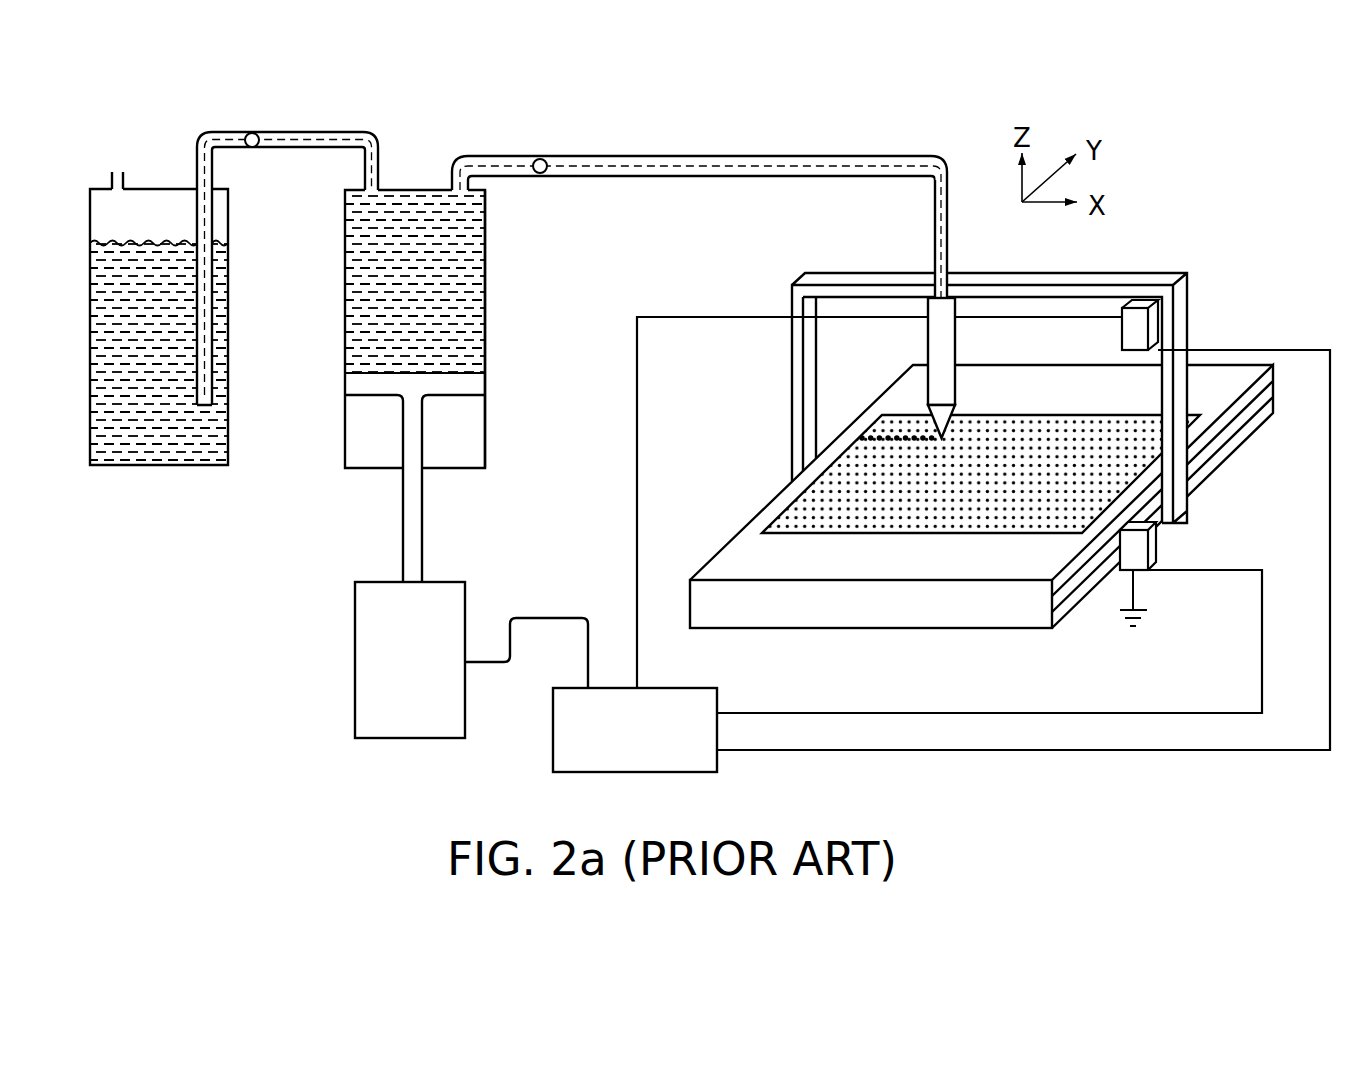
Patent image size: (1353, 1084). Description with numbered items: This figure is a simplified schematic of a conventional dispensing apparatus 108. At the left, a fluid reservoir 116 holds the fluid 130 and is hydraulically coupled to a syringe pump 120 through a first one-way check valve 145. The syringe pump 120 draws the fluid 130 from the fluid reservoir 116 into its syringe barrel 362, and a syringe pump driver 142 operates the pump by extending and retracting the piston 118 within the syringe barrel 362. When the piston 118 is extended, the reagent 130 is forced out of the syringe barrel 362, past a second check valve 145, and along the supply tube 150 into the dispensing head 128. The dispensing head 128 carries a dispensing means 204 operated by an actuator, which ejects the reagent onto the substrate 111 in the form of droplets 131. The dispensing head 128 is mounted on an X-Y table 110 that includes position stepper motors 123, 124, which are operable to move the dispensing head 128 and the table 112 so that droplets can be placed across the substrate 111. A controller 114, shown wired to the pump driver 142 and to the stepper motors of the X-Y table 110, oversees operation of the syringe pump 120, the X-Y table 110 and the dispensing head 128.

The dispensing apparatus 108 is at (732, 148).
The X-Y table 110 is at (1218, 285).
The substrate 111 is at (918, 527).
The table 112 is at (808, 602).
The controller 114 is at (553, 756).
The fluid reservoir 116 is at (151, 474).
The piston 118 is at (370, 388).
The syringe pump 120 is at (343, 264).
The position stepper motor 123 is at (1153, 333).
The position stepper motor 124 is at (1150, 552).
The dispensing head 128 is at (893, 371).
The fluid 130 is at (458, 280).
The row of deposited dots 131 is at (881, 447).
The syringe pump driver 142 is at (355, 631).
The one-way check valve 145 is at (252, 133).
The vertical feed pipe 150 is at (937, 210).
The dispensing means 204 is at (943, 342).
The syringe barrel 362 is at (485, 318).